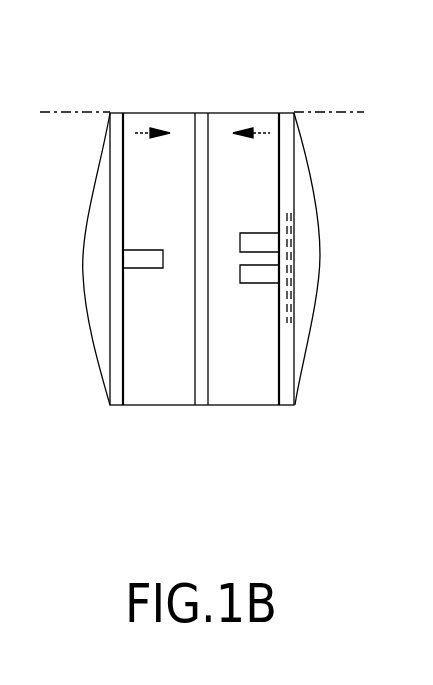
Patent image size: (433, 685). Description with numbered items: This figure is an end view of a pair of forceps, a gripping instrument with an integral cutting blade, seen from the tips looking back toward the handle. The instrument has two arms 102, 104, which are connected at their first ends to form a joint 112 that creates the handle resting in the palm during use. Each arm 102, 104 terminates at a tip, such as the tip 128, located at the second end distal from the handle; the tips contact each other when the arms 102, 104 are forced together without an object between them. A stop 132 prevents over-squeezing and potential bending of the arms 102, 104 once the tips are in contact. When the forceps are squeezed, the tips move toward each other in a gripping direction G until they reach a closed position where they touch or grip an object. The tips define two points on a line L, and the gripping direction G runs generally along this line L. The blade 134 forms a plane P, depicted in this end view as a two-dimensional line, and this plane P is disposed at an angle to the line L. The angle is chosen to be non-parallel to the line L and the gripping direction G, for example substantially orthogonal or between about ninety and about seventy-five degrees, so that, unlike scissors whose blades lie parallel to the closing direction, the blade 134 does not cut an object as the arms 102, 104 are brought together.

The arm 102 is at (255, 393).
The arm 104 is at (152, 390).
The joint 112 is at (202, 117).
The tip 128 is at (287, 117).
The stop 132 is at (117, 118).
The blade 134 is at (285, 240).
The plane P is at (285, 322).
The gripping direction G is at (202, 149).
The line L is at (205, 115).